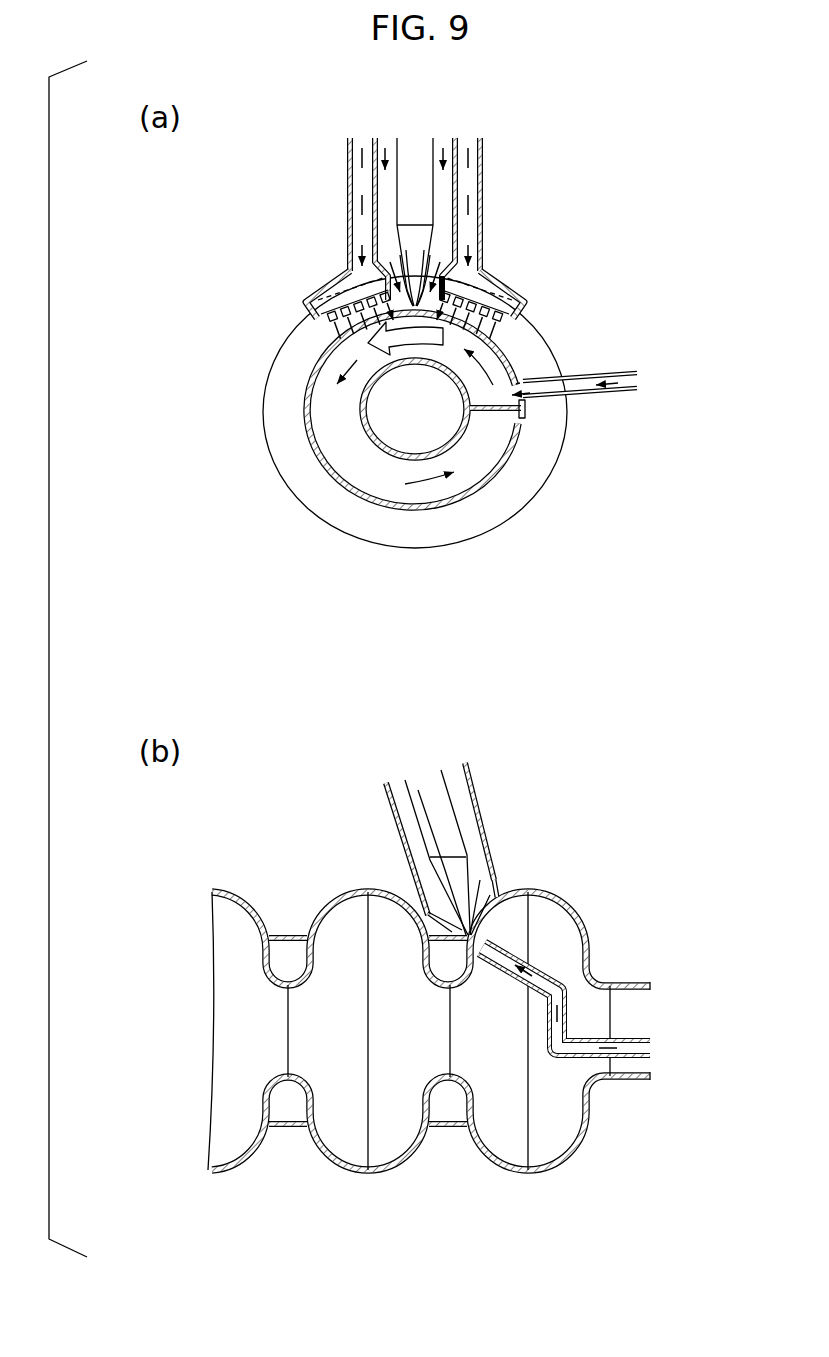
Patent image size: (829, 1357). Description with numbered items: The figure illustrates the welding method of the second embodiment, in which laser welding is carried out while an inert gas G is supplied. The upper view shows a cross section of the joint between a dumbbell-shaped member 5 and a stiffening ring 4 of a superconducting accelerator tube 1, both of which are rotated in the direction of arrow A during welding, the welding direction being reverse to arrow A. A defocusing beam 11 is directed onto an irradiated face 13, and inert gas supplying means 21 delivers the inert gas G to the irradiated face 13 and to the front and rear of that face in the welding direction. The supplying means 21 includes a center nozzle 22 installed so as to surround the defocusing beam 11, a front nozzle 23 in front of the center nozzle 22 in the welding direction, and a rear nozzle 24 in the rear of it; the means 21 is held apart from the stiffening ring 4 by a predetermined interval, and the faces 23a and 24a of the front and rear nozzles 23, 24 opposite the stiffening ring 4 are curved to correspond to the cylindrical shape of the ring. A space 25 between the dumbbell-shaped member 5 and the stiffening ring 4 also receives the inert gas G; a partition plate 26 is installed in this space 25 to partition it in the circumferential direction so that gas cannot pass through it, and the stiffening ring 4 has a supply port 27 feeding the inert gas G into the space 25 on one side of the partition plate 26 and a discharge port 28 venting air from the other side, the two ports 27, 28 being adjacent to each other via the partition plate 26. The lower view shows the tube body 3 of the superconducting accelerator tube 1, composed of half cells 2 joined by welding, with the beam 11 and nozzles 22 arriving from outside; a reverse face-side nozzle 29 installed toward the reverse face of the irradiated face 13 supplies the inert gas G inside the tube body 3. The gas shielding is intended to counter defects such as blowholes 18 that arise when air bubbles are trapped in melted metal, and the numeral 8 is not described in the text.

The superconducting accelerator tube 1 is at (549, 1181).
The half cell 2 is at (490, 528).
The tube body 3 is at (411, 556).
The stiffening ring 4 is at (345, 493).
The dumbbell-shaped member 5 is at (562, 488).
The fuel gas passage 8 is at (406, 293).
The defocusing beam 11 is at (411, 232).
The irradiated face 13 is at (427, 293).
The blowhole 18 is at (450, 287).
The inert gas supplying means 21 is at (314, 166).
The center nozzle 22 is at (444, 142).
The front nozzle 23 is at (527, 309).
The face of front nozzle 23a is at (500, 346).
The rear nozzle 24 is at (300, 306).
The face of rear nozzle 24a is at (322, 322).
The space 25 is at (345, 452).
The partition plate 26 is at (500, 412).
The supply port 27 is at (540, 400).
The discharge port 28 is at (527, 423).
The reverse face-side nozzle 29 is at (518, 944).
The arrow A is at (332, 342).
The inert gas G is at (361, 137).